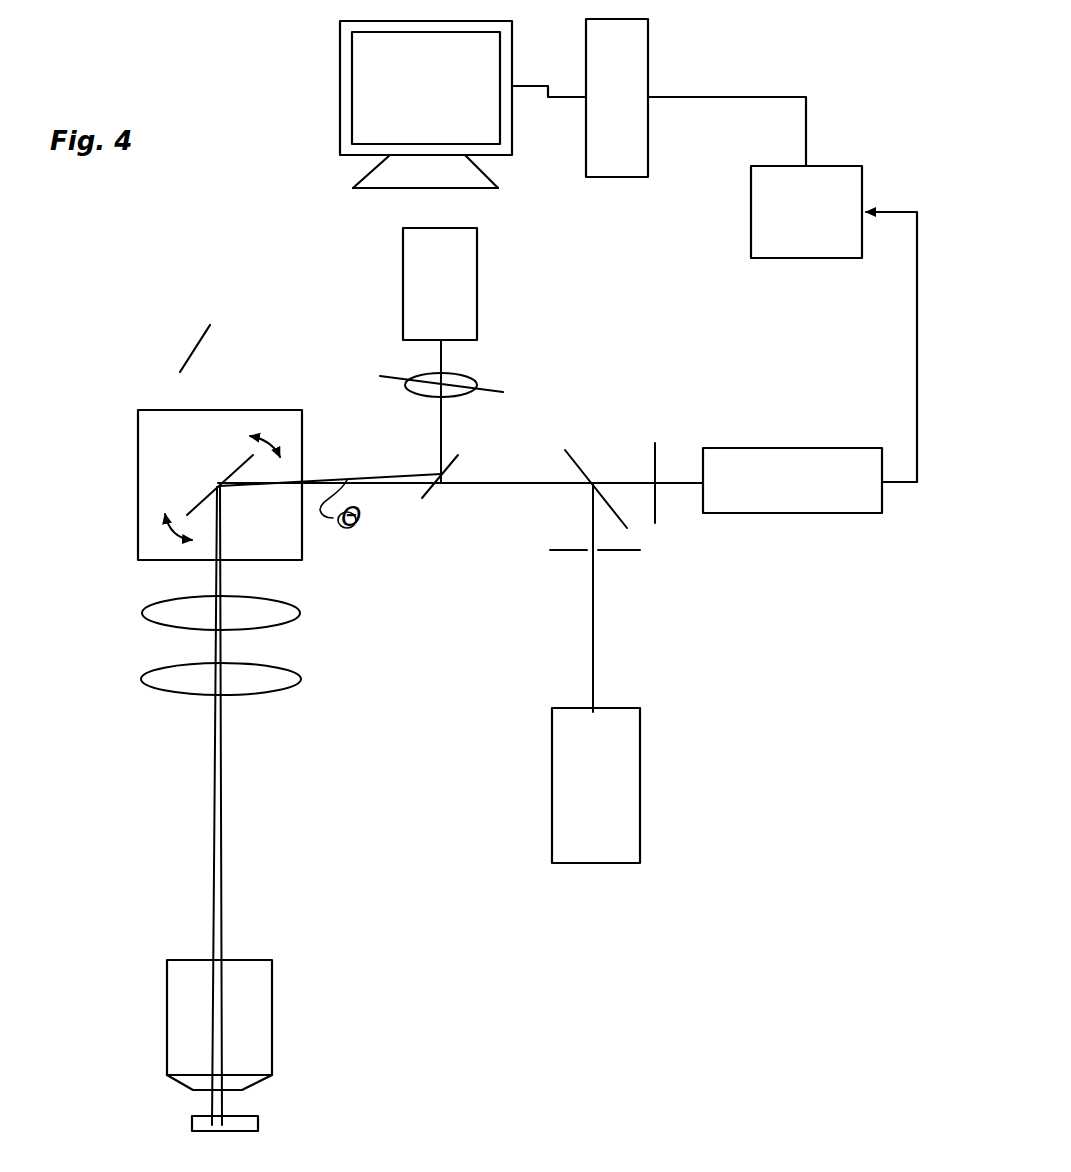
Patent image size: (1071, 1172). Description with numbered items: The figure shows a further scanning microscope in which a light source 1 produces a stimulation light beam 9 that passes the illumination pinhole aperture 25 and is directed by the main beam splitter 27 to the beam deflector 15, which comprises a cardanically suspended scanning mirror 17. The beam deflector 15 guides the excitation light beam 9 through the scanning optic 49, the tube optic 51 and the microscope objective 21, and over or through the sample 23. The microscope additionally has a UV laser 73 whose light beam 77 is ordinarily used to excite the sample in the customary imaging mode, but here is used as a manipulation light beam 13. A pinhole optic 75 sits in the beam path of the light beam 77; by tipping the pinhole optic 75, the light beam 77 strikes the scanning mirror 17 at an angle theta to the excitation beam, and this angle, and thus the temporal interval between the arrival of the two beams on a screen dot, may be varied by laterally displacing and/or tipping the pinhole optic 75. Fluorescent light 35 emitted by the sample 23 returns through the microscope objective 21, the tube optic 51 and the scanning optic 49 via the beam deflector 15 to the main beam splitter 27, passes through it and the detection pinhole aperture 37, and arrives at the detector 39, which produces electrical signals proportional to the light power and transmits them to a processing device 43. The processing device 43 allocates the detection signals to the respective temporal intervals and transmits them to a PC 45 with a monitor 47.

The light source 1 is at (595, 788).
The stimulation light beam 9 is at (593, 635).
The manipulation light beam 13 is at (440, 450).
The beam deflector 15 is at (197, 448).
The scanning mirror 17 is at (206, 493).
The microscope objective 21 is at (175, 1035).
The sample 23 is at (205, 1125).
The illumination pinhole aperture 25 is at (577, 551).
The main beam splitter 27 is at (578, 468).
The fluorescent light 35 is at (690, 481).
The detection pinhole aperture 37 is at (653, 467).
The detector 39 is at (752, 490).
The processing device 43 is at (826, 190).
The PC 45 is at (628, 52).
The monitor 47 is at (400, 77).
The scanning optic 49 is at (173, 610).
The tube optic 51 is at (173, 675).
The UV laser 73 is at (408, 285).
The pinhole optic 75 is at (458, 388).
The light beam 77 is at (428, 357).